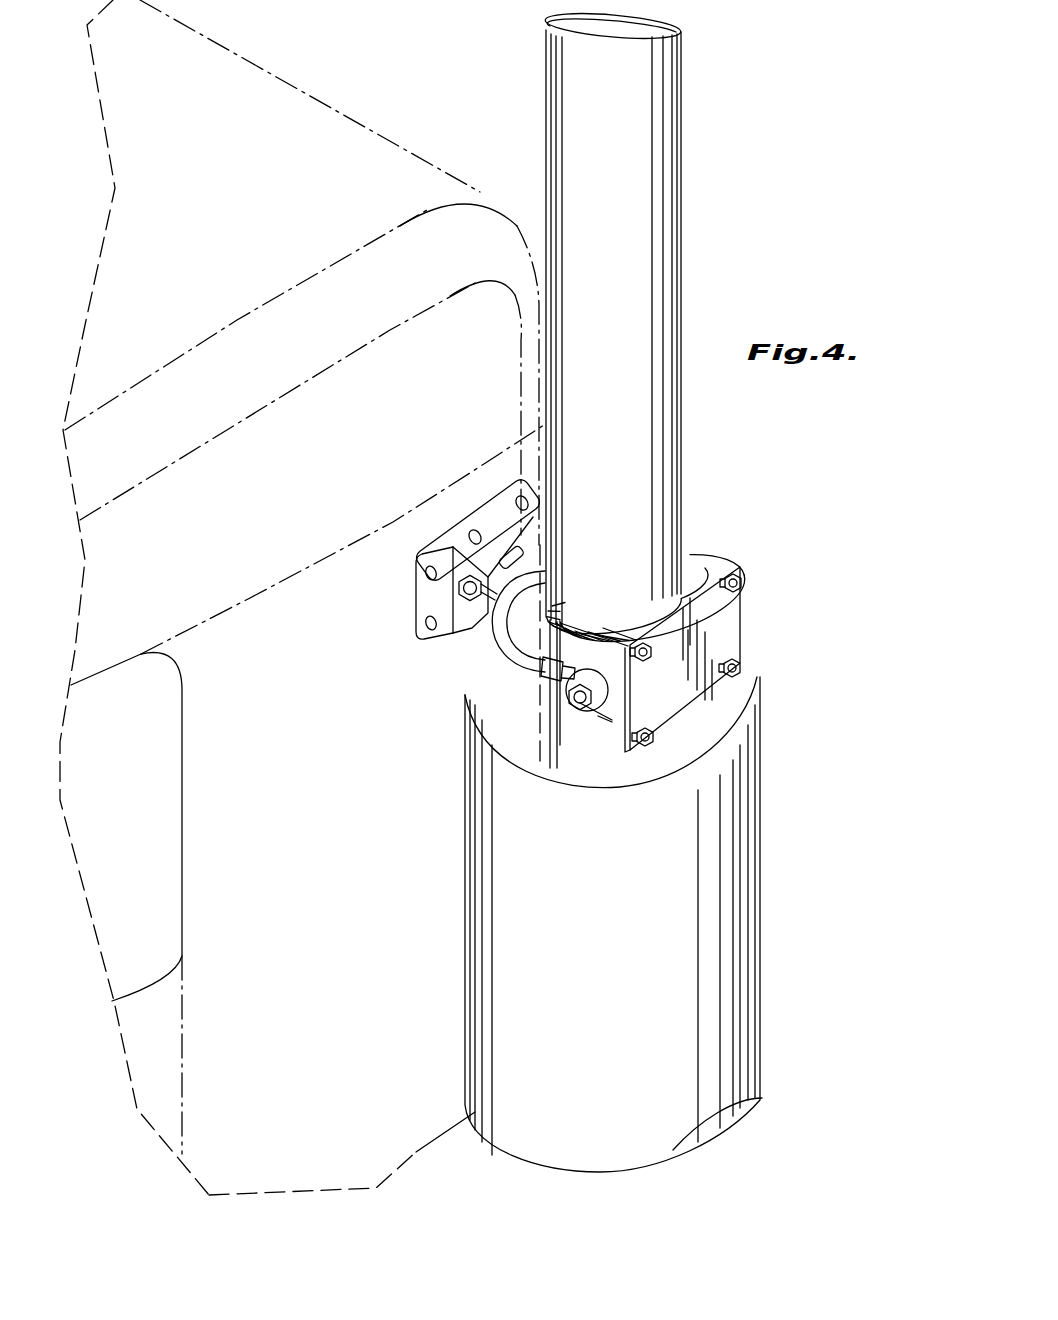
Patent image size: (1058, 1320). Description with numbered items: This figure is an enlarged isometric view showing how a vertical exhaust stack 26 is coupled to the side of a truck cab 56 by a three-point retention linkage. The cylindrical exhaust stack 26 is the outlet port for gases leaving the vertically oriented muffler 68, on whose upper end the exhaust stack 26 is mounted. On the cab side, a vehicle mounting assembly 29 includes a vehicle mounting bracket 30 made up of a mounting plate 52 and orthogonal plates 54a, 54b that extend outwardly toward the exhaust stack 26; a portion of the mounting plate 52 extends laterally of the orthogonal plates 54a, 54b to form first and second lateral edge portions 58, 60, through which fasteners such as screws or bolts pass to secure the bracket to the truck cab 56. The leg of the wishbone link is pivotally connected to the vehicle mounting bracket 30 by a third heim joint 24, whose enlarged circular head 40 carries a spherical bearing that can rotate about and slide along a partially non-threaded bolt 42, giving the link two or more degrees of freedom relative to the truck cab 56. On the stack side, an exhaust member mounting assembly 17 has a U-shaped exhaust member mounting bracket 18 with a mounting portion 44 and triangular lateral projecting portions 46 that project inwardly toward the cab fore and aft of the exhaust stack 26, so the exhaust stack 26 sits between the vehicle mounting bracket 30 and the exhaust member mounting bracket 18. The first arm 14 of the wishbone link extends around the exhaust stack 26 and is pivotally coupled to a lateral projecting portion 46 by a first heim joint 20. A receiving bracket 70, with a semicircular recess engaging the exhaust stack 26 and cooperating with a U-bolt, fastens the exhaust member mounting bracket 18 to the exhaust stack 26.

The first arm 14 is at (530, 677).
The exhaust member mounting assembly 17 is at (625, 679).
The exhaust member mounting bracket 18 is at (675, 630).
The first heim joint 20 is at (567, 703).
The third heim joint 24 is at (482, 622).
The exhaust stack 26 is at (658, 170).
The vehicle mounting assembly 29 is at (405, 545).
The vehicle mounting bracket 30 is at (468, 587).
The enlarged circular head 40 is at (458, 545).
The bolt 42 is at (505, 545).
The mounting portion 44 is at (732, 636).
The lateral projecting portions 46 is at (600, 728).
The mounting plate 52 is at (470, 532).
The orthogonal plate 54a is at (463, 620).
The orthogonal plate 54b is at (512, 500).
The truck cab 56 is at (421, 1136).
The first lateral edge portion 58 is at (433, 592).
The second lateral edge portion 60 is at (528, 482).
The muffler 68 is at (740, 913).
The receiving bracket 70 is at (693, 553).